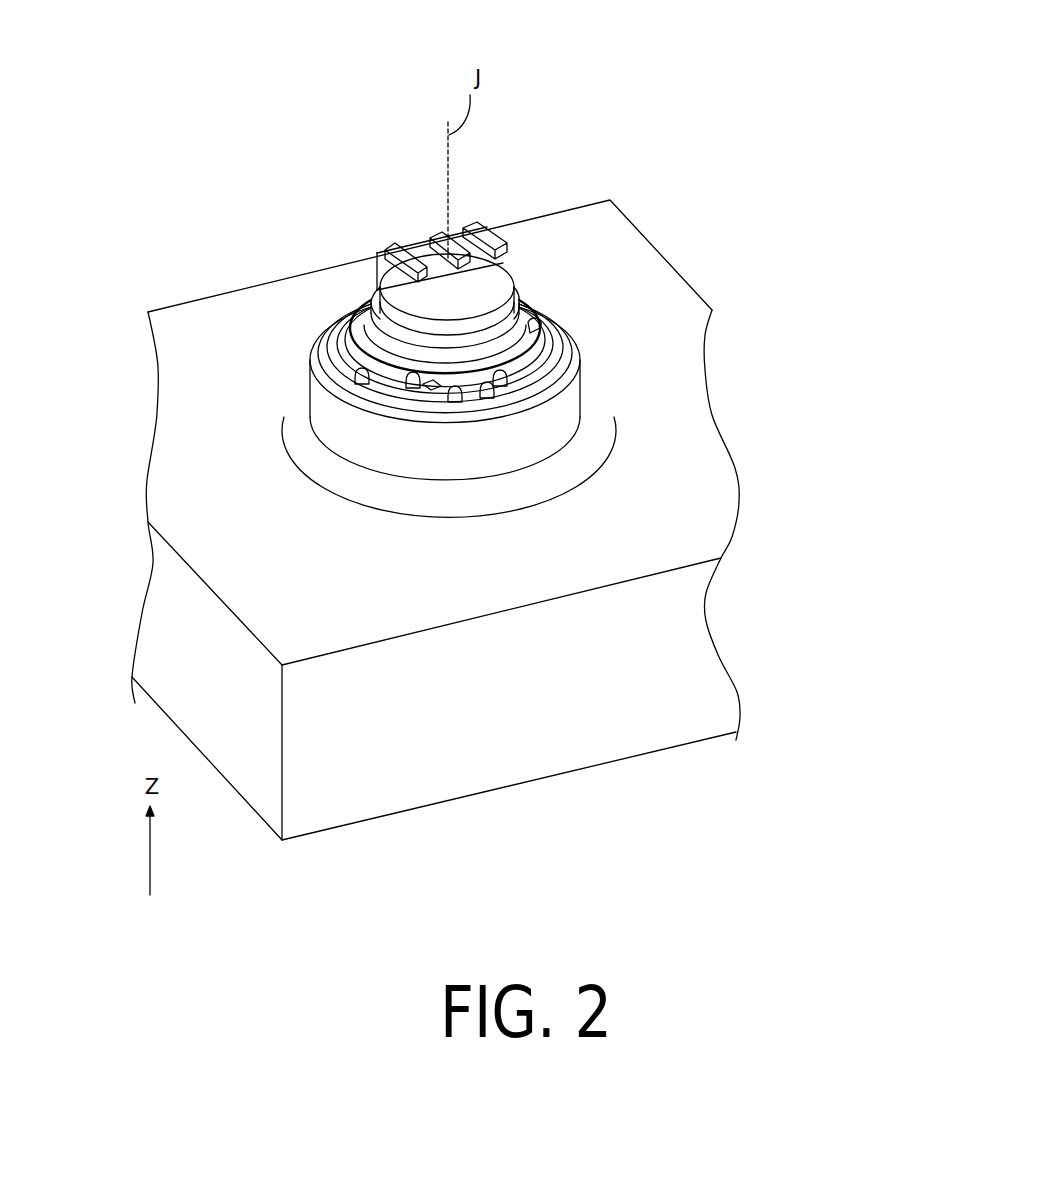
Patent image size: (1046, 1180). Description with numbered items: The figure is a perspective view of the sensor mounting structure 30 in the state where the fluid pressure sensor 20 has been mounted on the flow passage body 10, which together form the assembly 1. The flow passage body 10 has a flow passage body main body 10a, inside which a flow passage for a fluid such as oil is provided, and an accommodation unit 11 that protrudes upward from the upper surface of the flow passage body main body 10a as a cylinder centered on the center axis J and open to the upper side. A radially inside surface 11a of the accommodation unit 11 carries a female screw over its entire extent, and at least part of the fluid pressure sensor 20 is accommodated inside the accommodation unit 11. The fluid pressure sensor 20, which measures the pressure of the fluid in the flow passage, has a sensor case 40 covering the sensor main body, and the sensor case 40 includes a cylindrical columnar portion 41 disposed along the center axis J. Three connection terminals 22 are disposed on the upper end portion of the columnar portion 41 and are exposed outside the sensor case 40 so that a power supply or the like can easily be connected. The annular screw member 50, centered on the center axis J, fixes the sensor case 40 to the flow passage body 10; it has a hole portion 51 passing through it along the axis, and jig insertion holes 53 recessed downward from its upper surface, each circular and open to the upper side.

The motor unit 1 is at (582, 100).
The flow passage body 10 is at (626, 213).
The flow passage body main body 10a is at (634, 246).
The accommodation unit 11 is at (572, 335).
The radially inside surface 11a is at (460, 390).
The fluid pressure sensor 20 is at (516, 265).
The connection terminals 22 is at (470, 236).
The sensor mounting structure 30 is at (316, 234).
The sensor case 40 is at (371, 276).
The columnar portion 41 is at (352, 301).
The screw member 50 is at (546, 319).
The hole portion 51 is at (427, 385).
The jig insertion holes 53 is at (366, 385).